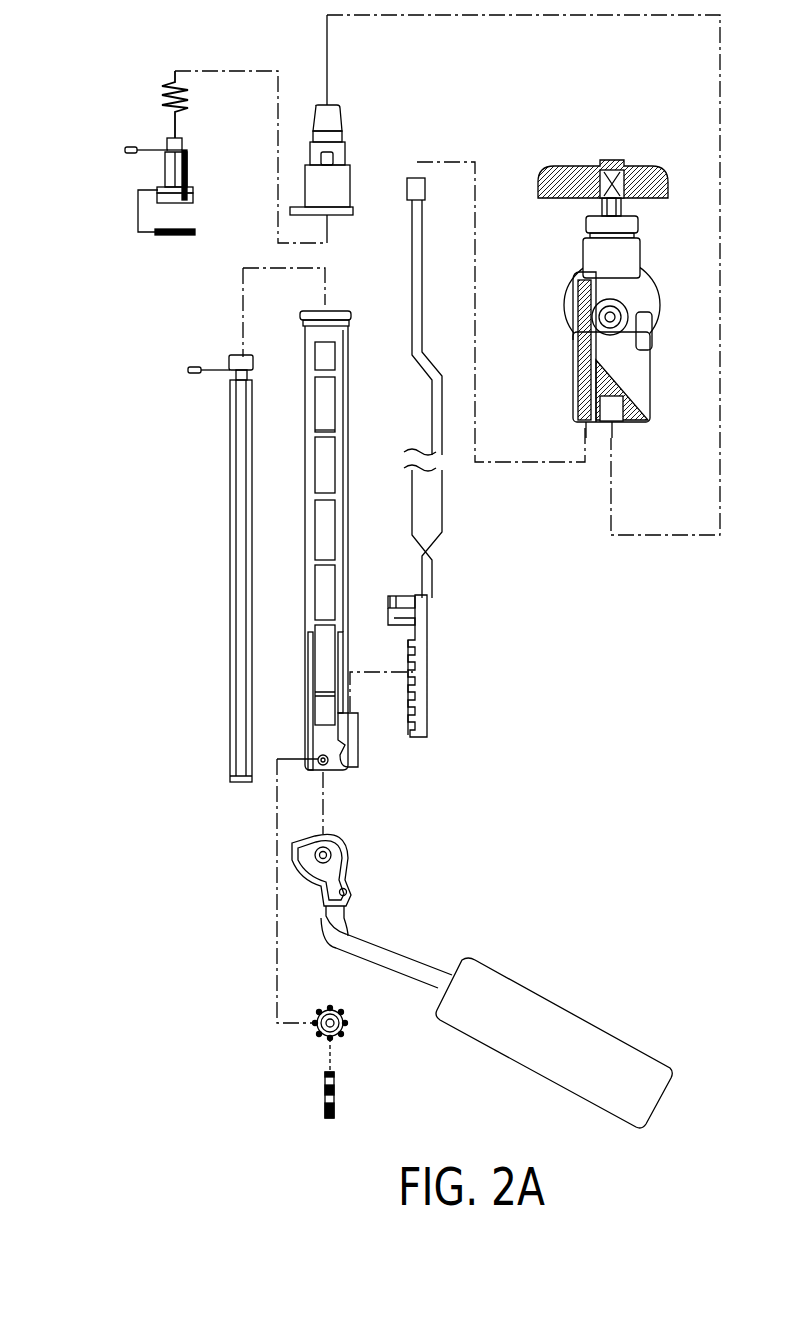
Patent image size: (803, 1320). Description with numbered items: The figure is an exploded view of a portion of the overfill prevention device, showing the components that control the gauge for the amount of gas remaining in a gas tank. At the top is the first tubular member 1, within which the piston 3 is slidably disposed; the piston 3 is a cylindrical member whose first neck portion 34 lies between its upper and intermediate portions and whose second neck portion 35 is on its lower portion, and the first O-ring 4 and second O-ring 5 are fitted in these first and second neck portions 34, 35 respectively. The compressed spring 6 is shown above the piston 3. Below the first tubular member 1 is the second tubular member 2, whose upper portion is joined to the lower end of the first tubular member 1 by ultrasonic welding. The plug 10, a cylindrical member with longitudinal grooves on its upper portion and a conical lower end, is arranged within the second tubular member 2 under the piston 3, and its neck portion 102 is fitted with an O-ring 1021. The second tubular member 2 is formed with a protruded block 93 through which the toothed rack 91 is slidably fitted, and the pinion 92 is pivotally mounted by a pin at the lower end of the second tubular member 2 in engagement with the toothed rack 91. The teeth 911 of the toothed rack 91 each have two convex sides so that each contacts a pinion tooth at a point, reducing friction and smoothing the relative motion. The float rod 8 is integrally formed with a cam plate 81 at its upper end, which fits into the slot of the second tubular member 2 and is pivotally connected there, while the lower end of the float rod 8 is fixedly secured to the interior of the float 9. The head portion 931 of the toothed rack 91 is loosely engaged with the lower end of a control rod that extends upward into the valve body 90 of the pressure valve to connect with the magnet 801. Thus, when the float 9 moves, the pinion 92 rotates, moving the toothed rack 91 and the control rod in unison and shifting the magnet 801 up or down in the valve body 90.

The first tubular member 1 is at (342, 114).
The second tubular member 2 is at (347, 320).
The piston 3 is at (187, 175).
The first O-ring 4 is at (125, 149).
The second O-ring 5 is at (177, 236).
The compressed spring 6 is at (160, 85).
The float rod 8 is at (396, 965).
The float 9 is at (532, 1025).
The plug 10 is at (232, 585).
The first neck portion 34 is at (184, 143).
The second neck portion 35 is at (193, 195).
The cam plate 81 is at (347, 862).
The valve body 90 is at (630, 352).
The toothed rack 91 is at (428, 622).
The pinion 92 is at (342, 1032).
The protruded block 93 is at (355, 745).
The neck portion 102 is at (255, 368).
The magnet 801 is at (409, 190).
The teeth 911 is at (416, 718).
The head portion 931 is at (410, 598).
The O-ring 1021 is at (190, 371).